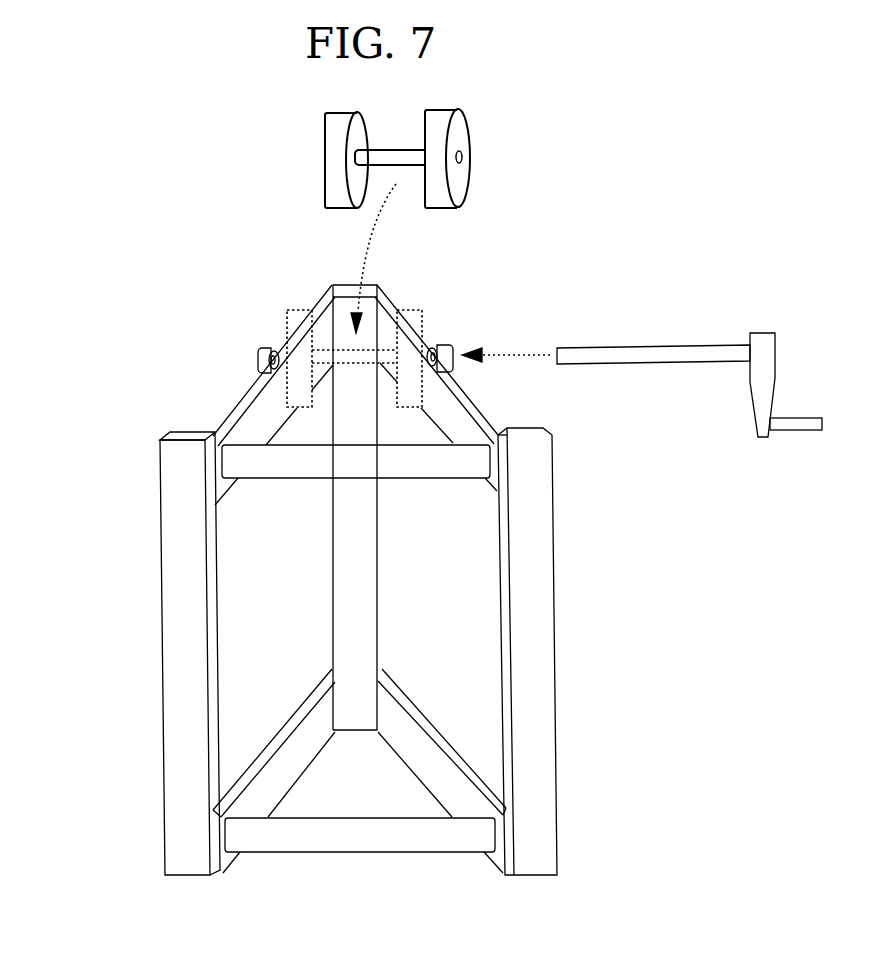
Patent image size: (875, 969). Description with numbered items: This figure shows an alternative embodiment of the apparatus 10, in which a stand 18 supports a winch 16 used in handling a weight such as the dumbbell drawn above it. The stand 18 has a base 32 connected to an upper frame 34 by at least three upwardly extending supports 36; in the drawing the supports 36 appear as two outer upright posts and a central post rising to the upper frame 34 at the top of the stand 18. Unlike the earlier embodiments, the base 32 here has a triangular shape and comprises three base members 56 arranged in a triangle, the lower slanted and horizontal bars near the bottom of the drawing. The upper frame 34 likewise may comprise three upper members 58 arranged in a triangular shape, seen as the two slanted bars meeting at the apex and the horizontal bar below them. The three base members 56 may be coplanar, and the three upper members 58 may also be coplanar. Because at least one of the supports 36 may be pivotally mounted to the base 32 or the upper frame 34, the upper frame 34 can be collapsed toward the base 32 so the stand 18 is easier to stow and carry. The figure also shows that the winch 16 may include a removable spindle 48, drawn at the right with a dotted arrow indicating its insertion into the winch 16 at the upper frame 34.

The apparatus 10 is at (138, 250).
The winch 16 is at (440, 345).
The stand 18 is at (613, 497).
The base 32 is at (372, 852).
The upper frame 34 is at (383, 292).
The upwardly extending supports 36 is at (330, 548).
The removable spindle 48 is at (643, 347).
The base members 56 is at (288, 715).
The upper members 58 is at (237, 400).